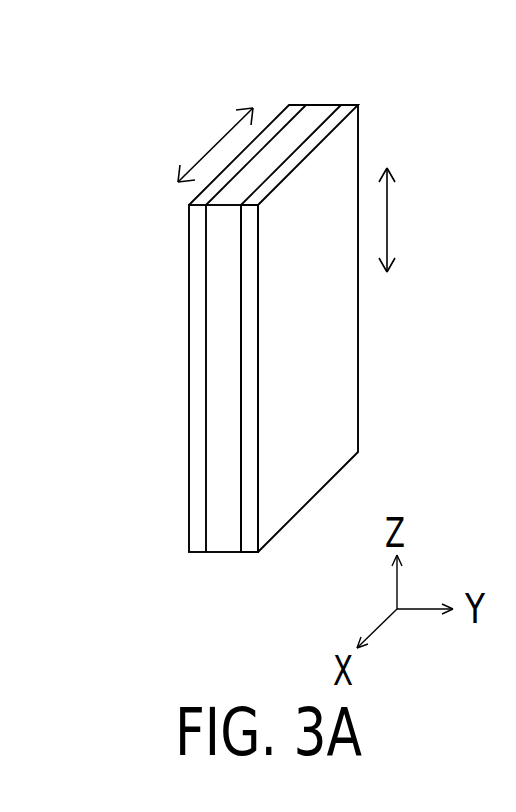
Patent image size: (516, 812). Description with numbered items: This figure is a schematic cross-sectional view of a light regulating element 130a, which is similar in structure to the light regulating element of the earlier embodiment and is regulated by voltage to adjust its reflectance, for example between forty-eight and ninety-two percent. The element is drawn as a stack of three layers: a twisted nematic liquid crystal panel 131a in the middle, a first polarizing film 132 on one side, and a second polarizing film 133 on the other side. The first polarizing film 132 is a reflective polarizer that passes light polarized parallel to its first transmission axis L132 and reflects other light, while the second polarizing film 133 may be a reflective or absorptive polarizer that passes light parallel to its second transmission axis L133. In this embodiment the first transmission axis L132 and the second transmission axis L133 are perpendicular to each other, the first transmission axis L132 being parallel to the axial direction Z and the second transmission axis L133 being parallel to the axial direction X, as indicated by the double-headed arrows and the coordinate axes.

The light regulating element 130a is at (90, 64).
The twisted nematic liquid crystal panel 131a is at (222, 543).
The first polarizing film 132 is at (250, 543).
The second polarizing film 133 is at (195, 543).
The first transmission axis L132 is at (387, 215).
The second transmission axis L133 is at (212, 148).